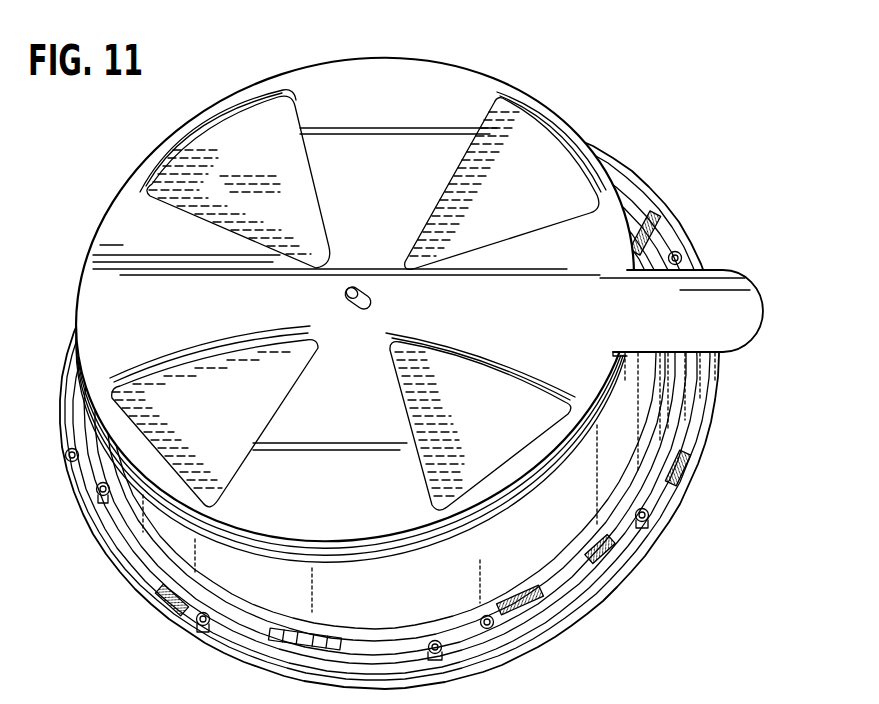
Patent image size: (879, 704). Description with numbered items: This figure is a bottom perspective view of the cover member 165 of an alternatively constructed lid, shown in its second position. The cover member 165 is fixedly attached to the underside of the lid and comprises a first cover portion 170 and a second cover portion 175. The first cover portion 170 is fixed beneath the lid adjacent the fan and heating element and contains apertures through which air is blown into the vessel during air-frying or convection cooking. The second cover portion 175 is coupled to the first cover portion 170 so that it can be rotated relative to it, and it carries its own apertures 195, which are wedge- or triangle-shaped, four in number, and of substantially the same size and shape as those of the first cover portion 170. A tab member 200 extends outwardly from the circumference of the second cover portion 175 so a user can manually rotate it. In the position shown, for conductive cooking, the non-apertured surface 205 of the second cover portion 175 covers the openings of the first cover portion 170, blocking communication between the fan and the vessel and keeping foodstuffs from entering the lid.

The cover member 165 is at (649, 174).
The first cover portion 170 is at (693, 501).
The second cover portion 175 is at (450, 97).
The apertures 195 is at (503, 446).
The tab member 200 is at (725, 330).
The surface 205 is at (150, 317).